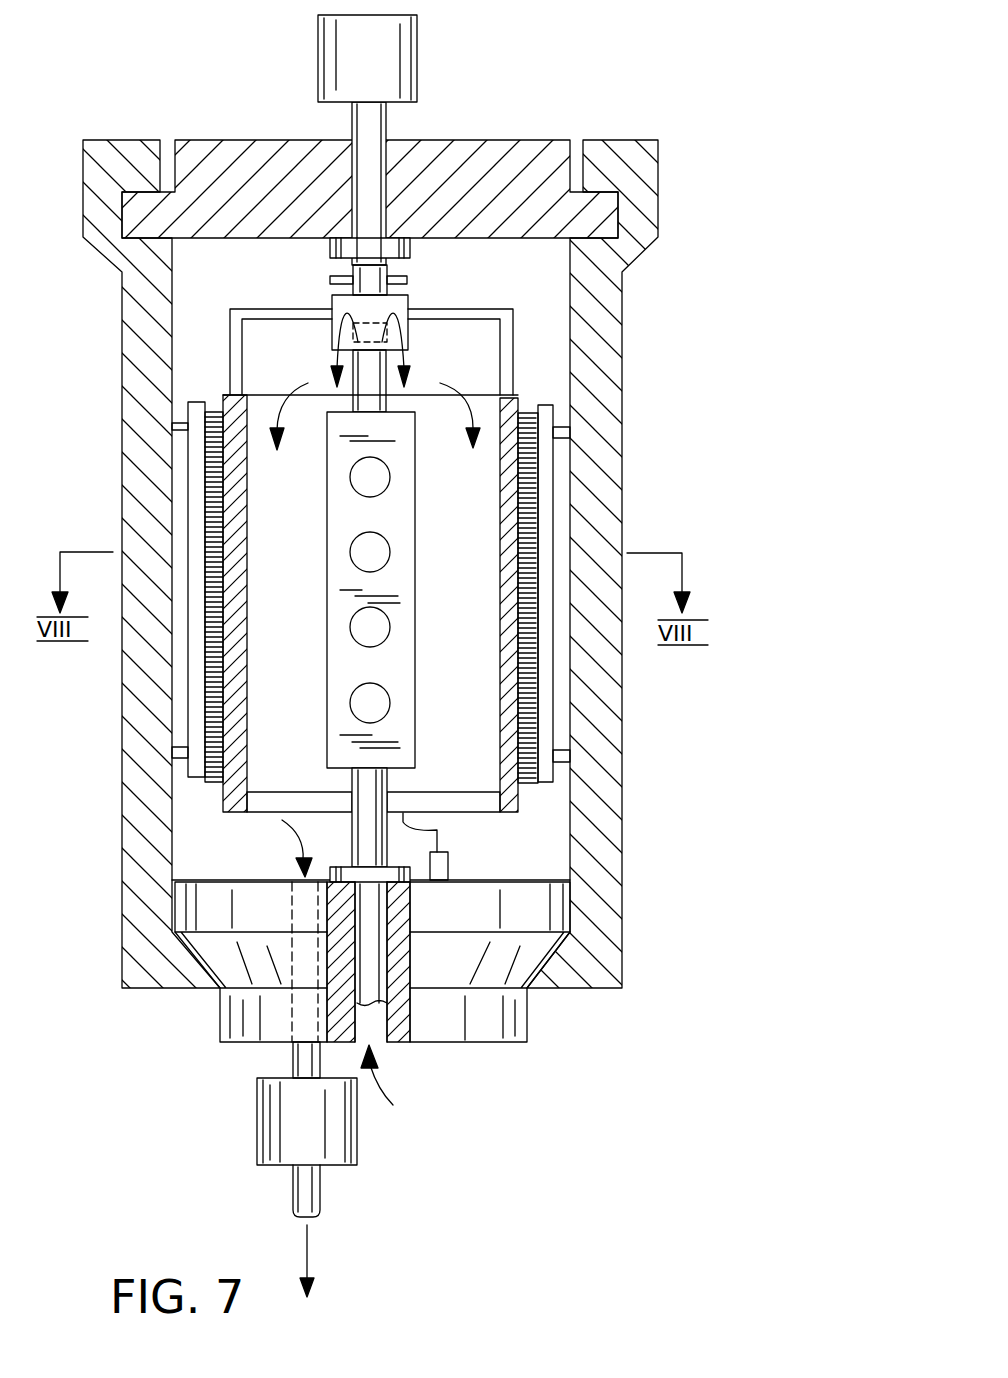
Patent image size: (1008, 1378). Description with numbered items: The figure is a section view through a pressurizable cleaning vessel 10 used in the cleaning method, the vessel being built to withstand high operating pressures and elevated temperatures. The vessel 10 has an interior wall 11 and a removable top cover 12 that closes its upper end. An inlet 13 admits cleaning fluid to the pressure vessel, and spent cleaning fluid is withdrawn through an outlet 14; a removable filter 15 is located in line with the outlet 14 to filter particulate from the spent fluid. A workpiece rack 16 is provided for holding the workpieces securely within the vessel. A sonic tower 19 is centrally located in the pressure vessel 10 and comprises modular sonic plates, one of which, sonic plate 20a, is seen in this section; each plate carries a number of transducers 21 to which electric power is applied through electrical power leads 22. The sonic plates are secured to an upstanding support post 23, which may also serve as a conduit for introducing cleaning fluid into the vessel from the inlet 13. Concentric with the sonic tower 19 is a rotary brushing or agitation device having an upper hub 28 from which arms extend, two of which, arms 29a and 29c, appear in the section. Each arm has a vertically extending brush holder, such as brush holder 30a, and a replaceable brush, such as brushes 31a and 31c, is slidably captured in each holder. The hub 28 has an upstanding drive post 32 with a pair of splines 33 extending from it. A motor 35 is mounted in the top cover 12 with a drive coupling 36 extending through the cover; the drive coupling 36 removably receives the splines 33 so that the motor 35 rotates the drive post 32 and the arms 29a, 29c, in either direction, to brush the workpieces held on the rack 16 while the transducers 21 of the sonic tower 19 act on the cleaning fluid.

The cleaning vessel 10 is at (612, 108).
The interior wall 11 is at (178, 858).
The top cover 12 is at (217, 147).
The inlet 13 is at (382, 1028).
The outlet 14 is at (305, 1058).
The filter 15 is at (273, 1138).
The workpiece rack 16 is at (548, 500).
The sonic tower 19 is at (433, 598).
The sonic plate 20a is at (347, 443).
The transducers 21 is at (355, 550).
The electrical power leads 22 is at (460, 830).
The support post 23 is at (367, 803).
The upper hub 28 is at (337, 300).
The arm 29a is at (230, 363).
The arm 29c is at (513, 350).
The brush holder 30a is at (233, 667).
The brush 31a is at (207, 502).
The brush 31c is at (540, 695).
The drive post 32 is at (368, 275).
The splines 33 is at (405, 280).
The motor 35 is at (332, 42).
The drive coupling 36 is at (364, 167).